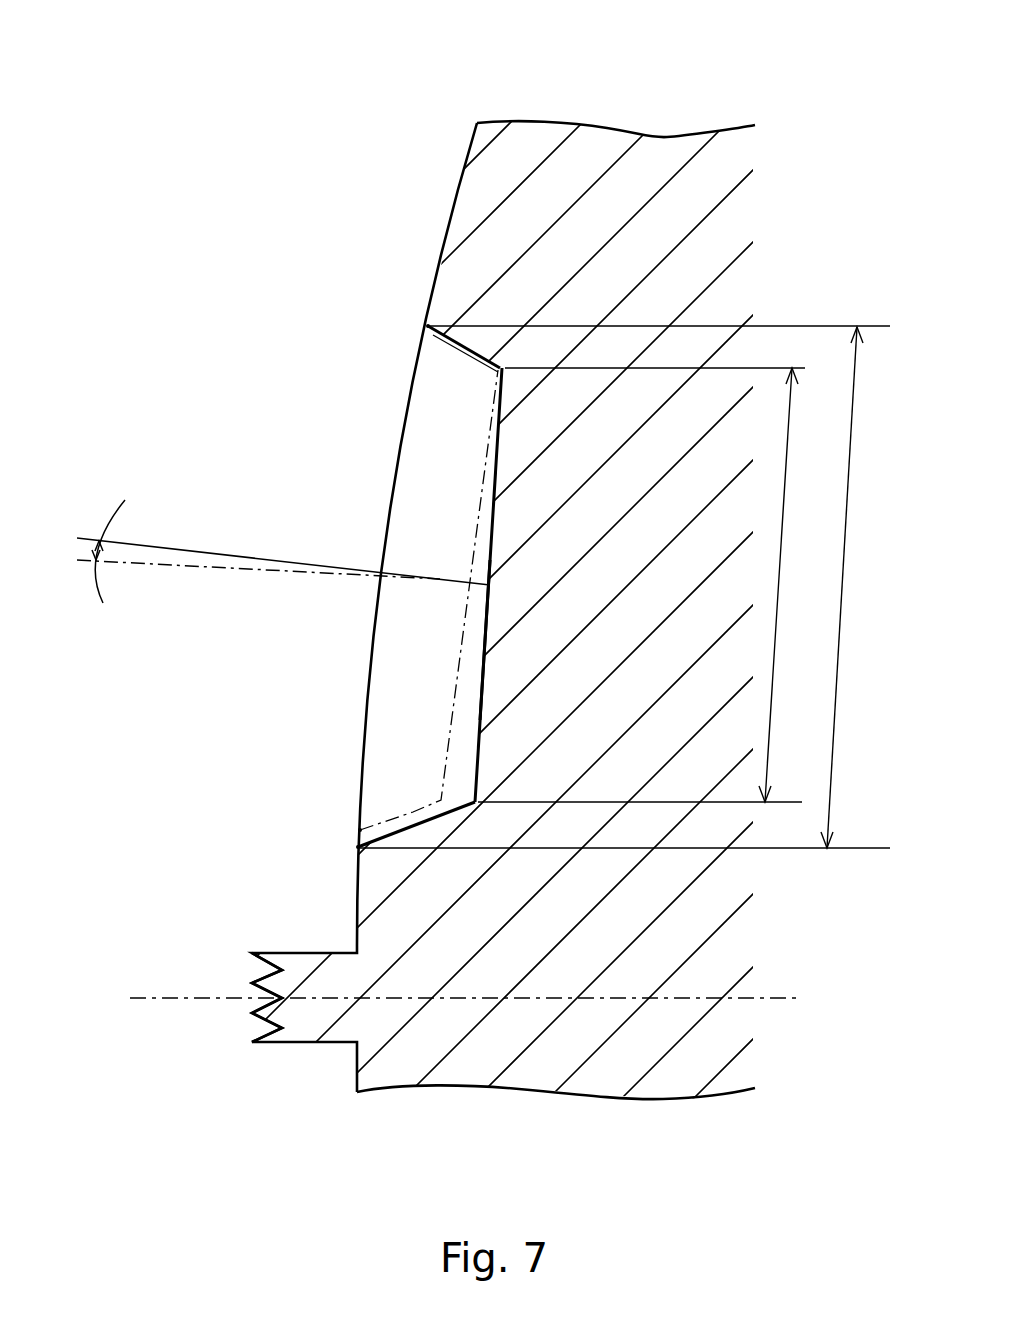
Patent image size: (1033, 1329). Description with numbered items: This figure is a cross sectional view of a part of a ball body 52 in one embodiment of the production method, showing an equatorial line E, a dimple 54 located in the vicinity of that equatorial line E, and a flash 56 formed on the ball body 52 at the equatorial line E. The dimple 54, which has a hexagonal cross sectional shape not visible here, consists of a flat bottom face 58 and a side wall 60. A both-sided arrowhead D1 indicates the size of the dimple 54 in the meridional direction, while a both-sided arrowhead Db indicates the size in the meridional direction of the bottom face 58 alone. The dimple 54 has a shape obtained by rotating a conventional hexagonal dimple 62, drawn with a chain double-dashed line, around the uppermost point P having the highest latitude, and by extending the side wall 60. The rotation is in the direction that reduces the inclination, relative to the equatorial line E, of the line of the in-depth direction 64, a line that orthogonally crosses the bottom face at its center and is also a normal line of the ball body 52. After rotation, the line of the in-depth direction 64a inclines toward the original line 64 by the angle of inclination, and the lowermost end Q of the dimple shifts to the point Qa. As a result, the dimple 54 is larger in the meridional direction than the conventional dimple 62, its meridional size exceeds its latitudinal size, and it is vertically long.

The ball body 52 is at (603, 150).
The dimple 54 is at (478, 713).
The flash 56 is at (300, 1027).
The bottom face 58 is at (493, 537).
The side wall 60 is at (470, 330).
The conventional hexagonal dimple 62 is at (482, 487).
The line of the in-depth direction 64 is at (182, 550).
The line of the in-depth direction after the rotation 64a is at (153, 567).
The uppermost point P is at (428, 327).
The lowermost end Q is at (360, 830).
The shifted lowermost end point Qa is at (358, 847).
The equatorial line E is at (162, 1008).
The both-sided arrowhead D1 is at (625, 587).
The both-sided arrowhead Db is at (646, 585).